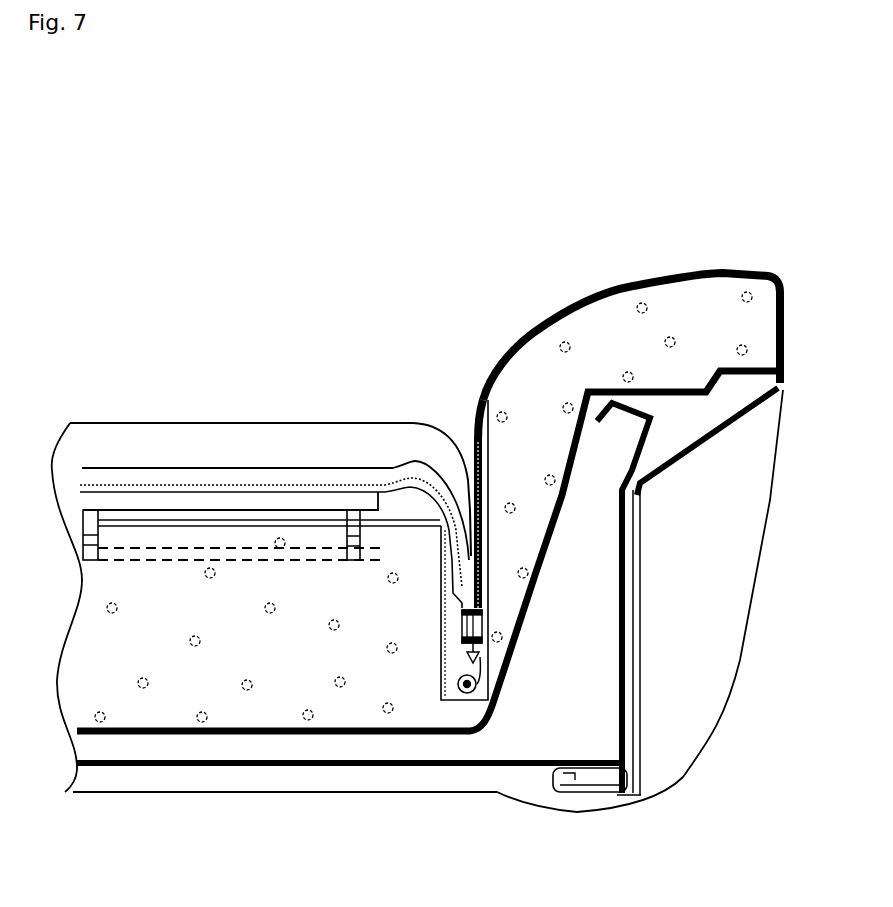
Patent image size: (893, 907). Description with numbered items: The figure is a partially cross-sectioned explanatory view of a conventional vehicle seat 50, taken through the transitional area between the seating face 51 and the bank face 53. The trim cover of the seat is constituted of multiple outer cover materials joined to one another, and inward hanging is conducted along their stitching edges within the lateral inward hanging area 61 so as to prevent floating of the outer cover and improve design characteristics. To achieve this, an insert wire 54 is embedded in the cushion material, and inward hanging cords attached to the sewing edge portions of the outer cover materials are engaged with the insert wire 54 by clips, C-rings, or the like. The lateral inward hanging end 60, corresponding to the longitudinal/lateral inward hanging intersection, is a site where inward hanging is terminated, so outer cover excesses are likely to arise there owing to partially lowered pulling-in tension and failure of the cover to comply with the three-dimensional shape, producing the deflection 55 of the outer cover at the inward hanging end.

The vehicle seat 50 is at (313, 208).
The seating face 51 is at (205, 423).
The bank face 53 is at (715, 272).
The insert wire 54 is at (468, 693).
The deflection of outer cover at inward hanging end of conventional example 55 is at (437, 470).
The lateral inward hanging end 60 is at (418, 467).
The lateral inward hanging area 61 is at (275, 467).